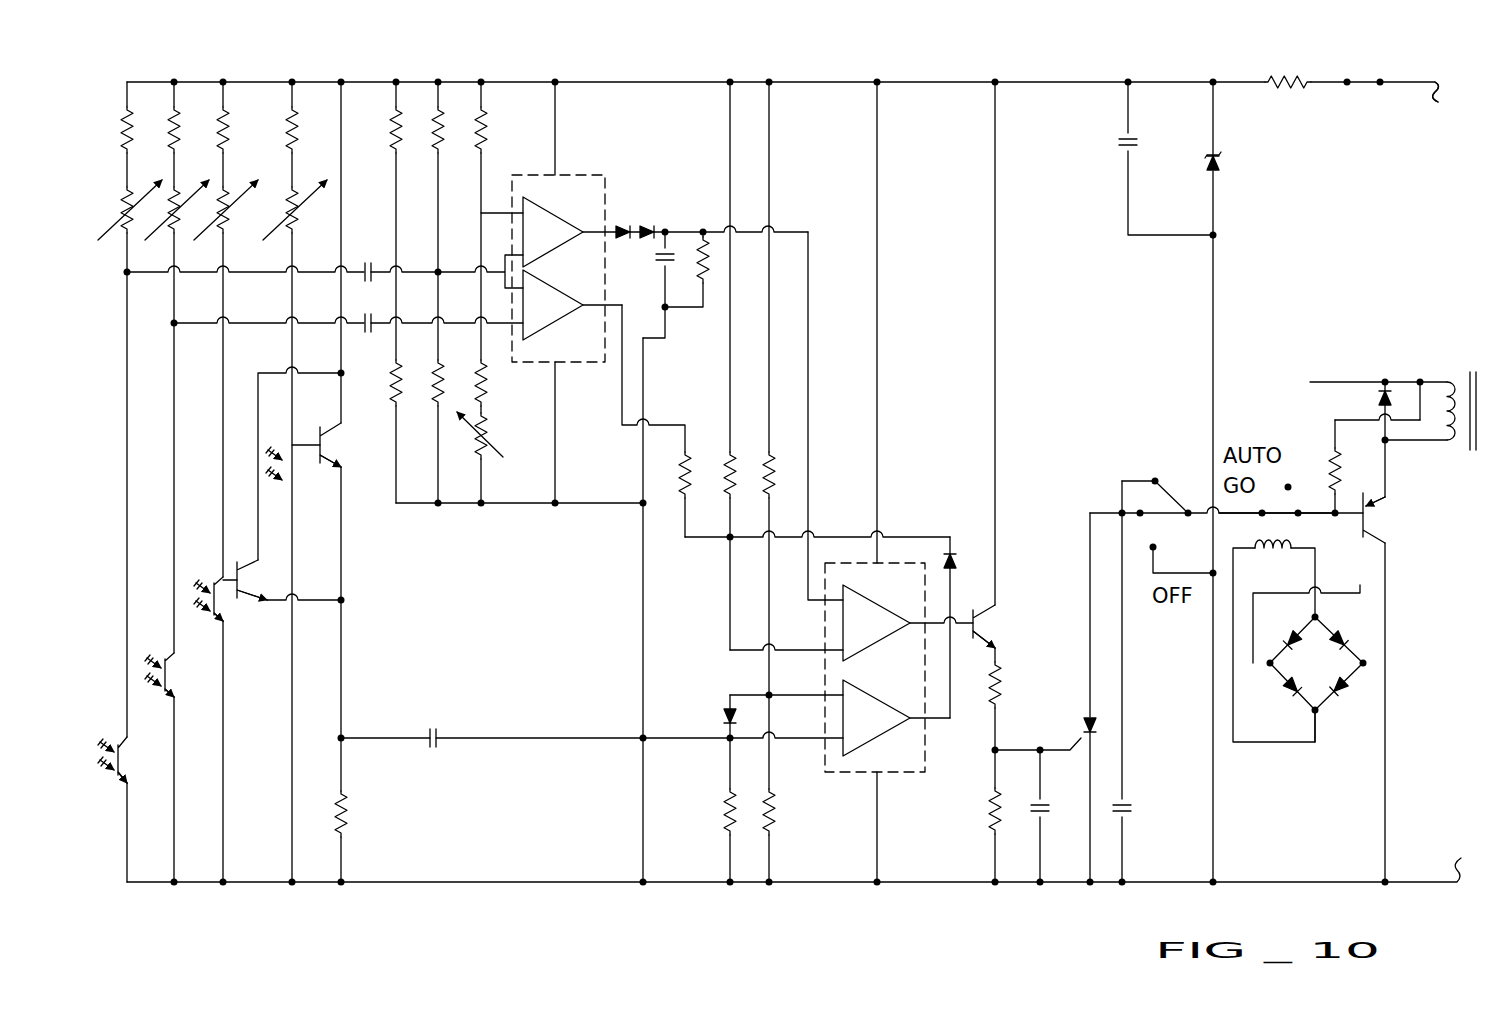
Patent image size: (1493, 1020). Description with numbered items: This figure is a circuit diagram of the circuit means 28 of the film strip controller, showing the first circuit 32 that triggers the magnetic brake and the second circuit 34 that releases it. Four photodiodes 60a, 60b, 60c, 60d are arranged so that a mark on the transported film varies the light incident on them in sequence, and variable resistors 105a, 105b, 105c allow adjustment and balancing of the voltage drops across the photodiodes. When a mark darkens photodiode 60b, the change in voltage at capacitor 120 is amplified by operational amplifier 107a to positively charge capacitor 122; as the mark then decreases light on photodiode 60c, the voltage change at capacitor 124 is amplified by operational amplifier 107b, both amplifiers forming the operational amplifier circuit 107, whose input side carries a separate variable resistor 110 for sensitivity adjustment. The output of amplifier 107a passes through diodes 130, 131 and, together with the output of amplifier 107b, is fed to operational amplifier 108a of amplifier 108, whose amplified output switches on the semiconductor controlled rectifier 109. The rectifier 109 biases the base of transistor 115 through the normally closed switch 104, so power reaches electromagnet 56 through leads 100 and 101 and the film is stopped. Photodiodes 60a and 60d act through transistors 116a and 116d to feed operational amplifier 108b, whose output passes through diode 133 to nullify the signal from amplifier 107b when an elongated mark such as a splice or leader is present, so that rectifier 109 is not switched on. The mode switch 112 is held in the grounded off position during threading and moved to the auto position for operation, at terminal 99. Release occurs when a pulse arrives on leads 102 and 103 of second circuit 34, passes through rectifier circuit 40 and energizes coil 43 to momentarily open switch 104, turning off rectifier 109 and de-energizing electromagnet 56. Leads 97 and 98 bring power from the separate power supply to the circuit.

The variable resistor 105a is at (235, 195).
The variable resistor 105b is at (110, 200).
The variable resistor 105c is at (185, 200).
The capacitor 120 is at (364, 264).
The capacitor 124 is at (366, 330).
The operational amplifier circuit 107 is at (597, 165).
The operational amplifier 107a is at (562, 218).
The operational amplifier 107b is at (565, 320).
The diode 130 is at (624, 226).
The diode 131 is at (648, 226).
The capacitor 122 is at (658, 262).
The variable resistor 110 is at (484, 436).
The transistor 116a is at (243, 593).
The transistor 116d is at (322, 447).
The photodiode 60a is at (232, 623).
The photodiode 60b is at (113, 755).
The photodiode 60c is at (157, 670).
The photodiode 60d is at (272, 458).
The amplifier 108 is at (901, 558).
The operational amplifier 108a is at (890, 637).
The operational amplifier 108b is at (888, 728).
The diode 133 is at (958, 560).
The semiconductor controlled rectifier 109 is at (1083, 716).
The switch 112 is at (1176, 488).
The normally closed switch 104 is at (1300, 476).
The auto contact line 99 is at (1277, 527).
The coil 43 is at (1283, 547).
The second circuit 34 is at (1327, 560).
The lead 102 is at (1360, 593).
The lead 103 is at (1367, 665).
The rectifier circuit 40 is at (1322, 708).
The transistor 115 is at (1360, 498).
The lead 101 is at (1436, 380).
The lead 100 is at (1435, 447).
The electromagnet 56 is at (1471, 372).
The circuit means 28 is at (1296, 303).
The first circuit 32 is at (1076, 72).
The lead 98 is at (1431, 107).
The lead 97 is at (1457, 858).